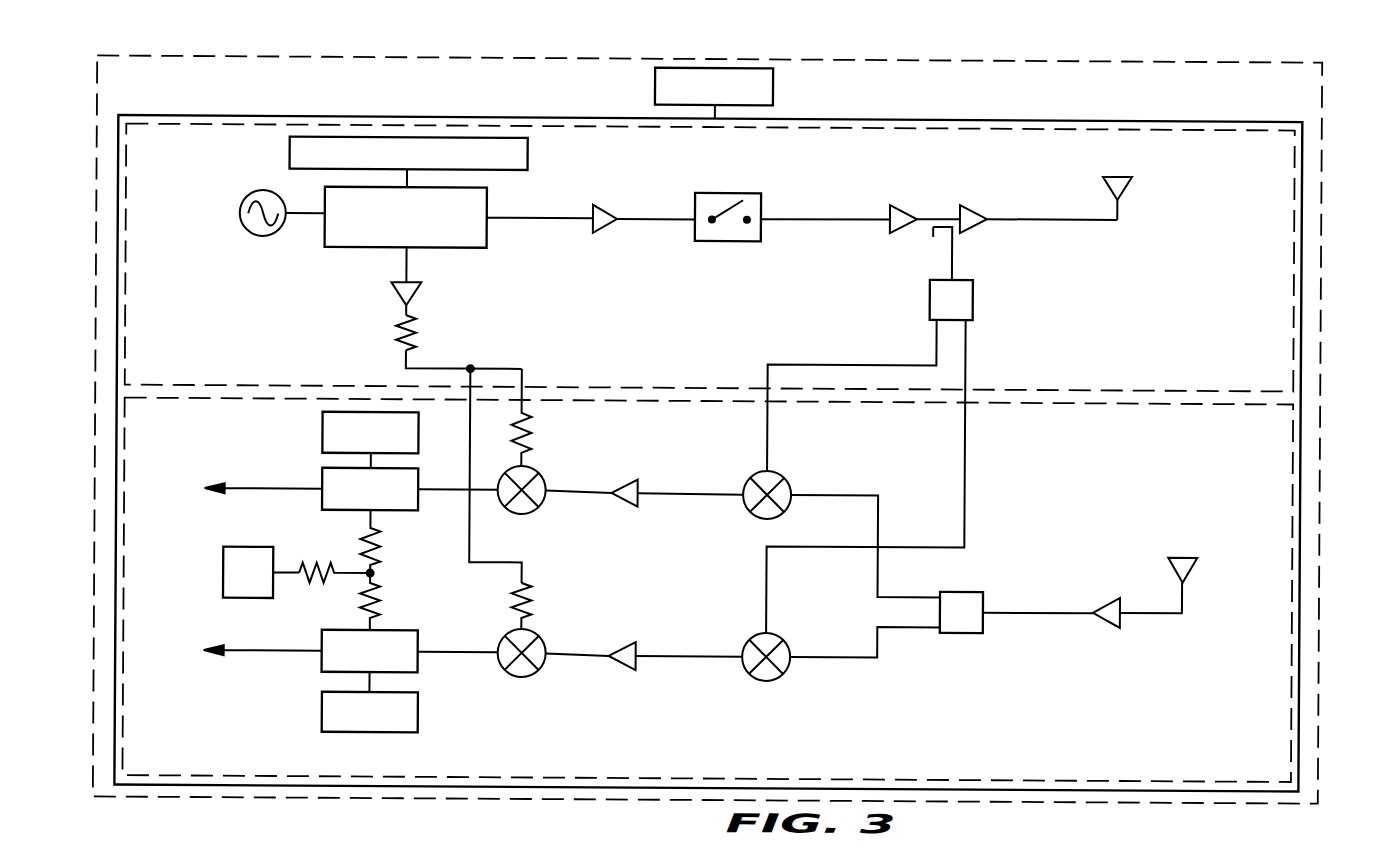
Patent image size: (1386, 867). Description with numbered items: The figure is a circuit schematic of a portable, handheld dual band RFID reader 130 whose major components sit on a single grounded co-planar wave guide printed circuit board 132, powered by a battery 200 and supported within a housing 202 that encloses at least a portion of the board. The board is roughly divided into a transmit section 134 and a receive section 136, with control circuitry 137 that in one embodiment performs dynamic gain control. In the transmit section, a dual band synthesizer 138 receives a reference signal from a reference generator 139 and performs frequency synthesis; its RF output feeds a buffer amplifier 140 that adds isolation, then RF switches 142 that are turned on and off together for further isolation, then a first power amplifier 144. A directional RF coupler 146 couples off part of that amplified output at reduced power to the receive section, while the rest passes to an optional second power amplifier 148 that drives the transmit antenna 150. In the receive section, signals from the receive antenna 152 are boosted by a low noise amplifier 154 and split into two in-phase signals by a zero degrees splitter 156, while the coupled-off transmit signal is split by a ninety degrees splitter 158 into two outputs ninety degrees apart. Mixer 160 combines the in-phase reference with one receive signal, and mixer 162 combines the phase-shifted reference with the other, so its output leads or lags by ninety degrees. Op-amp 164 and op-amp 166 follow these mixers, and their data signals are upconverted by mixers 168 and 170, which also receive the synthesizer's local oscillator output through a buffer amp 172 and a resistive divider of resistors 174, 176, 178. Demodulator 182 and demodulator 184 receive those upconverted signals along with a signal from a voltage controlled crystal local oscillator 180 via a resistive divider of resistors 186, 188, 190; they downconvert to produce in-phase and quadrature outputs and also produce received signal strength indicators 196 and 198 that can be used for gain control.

The RF reader 130 is at (372, 36).
The printed circuit board 132 is at (517, 116).
The transmit section 134 is at (1300, 236).
The receive section 136 is at (1300, 551).
The control circuitry 137 is at (288, 150).
The synthesizer 138 is at (368, 250).
The reference generator 139 is at (252, 238).
The buffer amplifier 140 is at (606, 234).
The RF switches 142 is at (735, 193).
The first power amplifier 144 is at (890, 212).
The directional RF coupler 146 is at (945, 236).
The second power amplifier 148 is at (976, 228).
The transmit antenna 150 is at (1125, 193).
The receive antenna 152 is at (1191, 577).
The low noise amplifier 154 is at (1103, 606).
The 0 degrees splitter 156 is at (964, 590).
The 90 degrees splitter 158 is at (929, 302).
The mixer 160 is at (783, 468).
The mixer 162 is at (783, 688).
The op-amp 164 is at (625, 480).
The op-amp 166 is at (623, 672).
The mixer 168 is at (540, 468).
The mixer 170 is at (542, 686).
The buffer amp 172 is at (393, 293).
The resistor 174 is at (396, 341).
The resistor 176 is at (531, 428).
The resistor 178 is at (517, 592).
The local oscillator 180 is at (224, 573).
The demodulator 182 is at (322, 483).
The demodulator 184 is at (419, 645).
The resistor 186 is at (327, 566).
The resistor 188 is at (382, 549).
The resistor 190 is at (383, 613).
The Received Signal Strength Indicator 196 is at (322, 431).
The Received Signal Strength Indicator 198 is at (323, 714).
The battery 200 is at (771, 88).
The housing 202 is at (967, 59).